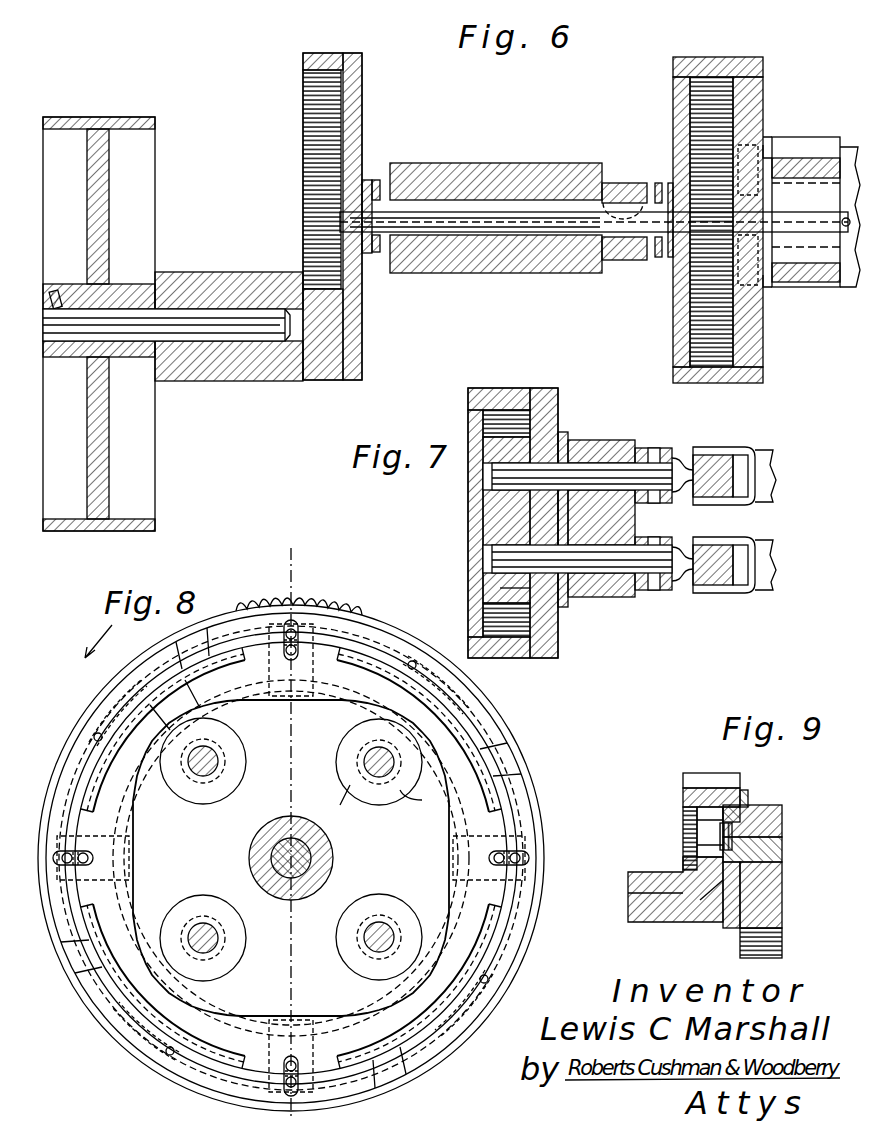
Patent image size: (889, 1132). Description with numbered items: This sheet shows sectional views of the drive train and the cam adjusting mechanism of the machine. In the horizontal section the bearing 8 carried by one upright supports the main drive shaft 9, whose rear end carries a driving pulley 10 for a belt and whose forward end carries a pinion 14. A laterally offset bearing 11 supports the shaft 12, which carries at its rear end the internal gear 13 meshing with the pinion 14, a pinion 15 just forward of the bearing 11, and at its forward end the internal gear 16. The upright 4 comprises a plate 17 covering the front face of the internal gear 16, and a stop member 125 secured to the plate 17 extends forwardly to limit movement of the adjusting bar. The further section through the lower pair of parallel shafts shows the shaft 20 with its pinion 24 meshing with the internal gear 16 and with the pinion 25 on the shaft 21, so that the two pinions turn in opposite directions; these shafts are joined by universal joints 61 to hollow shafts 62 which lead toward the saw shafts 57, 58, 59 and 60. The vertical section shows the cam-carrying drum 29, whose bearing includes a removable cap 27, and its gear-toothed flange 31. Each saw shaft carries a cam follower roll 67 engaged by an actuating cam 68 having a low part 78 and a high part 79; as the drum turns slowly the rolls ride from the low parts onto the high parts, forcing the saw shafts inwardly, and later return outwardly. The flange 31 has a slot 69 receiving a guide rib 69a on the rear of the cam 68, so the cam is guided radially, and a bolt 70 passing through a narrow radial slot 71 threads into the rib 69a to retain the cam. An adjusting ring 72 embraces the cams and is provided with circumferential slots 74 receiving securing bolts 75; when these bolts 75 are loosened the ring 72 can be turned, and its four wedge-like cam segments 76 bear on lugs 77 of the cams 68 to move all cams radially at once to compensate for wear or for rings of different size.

In FIG. 6, the upright 4 is at (822, 137).
In FIG. 6, the bearing 8 is at (218, 272).
In FIG. 6, the main drive shaft 9 is at (222, 333).
In FIG. 8, the main drive shaft 9 is at (312, 557).
In FIG. 6, the driving pulley 10 is at (150, 512).
In FIG. 6, the bearing 11 is at (430, 163).
In FIG. 6, the shaft 12 is at (475, 232).
In FIG. 6, the internal gear 13 is at (362, 114).
In FIG. 9, the internal gear 13 is at (750, 795).
In FIG. 6, the pinion 14 is at (325, 345).
In FIG. 6, the pinion 15 is at (640, 190).
In FIG. 6, the internal gear 16 is at (673, 68).
In FIG. 7, the internal gear 16 is at (498, 390).
In FIG. 6, the plate 17 is at (742, 57).
In FIG. 7, the plate 17 is at (548, 390).
In FIG. 6, the shaft 20 is at (800, 175).
In FIG. 7, the shaft 20 is at (592, 468).
In FIG. 6, the shaft 21 is at (796, 282).
In FIG. 7, the shaft 21 is at (615, 565).
In FIG. 7, the pinion 24 is at (497, 447).
In FIG. 7, the pinion 25 is at (500, 588).
In FIG. 9, the removable cap 27 is at (640, 874).
In FIG. 9, the cam-carrying drum 29 is at (634, 920).
In FIG. 8, the flange 31 is at (208, 620).
In FIG. 9, the flange 31 is at (690, 798).
In FIG. 8, the saw shaft 57 is at (372, 770).
In FIG. 8, the saw shaft 58 is at (208, 770).
In FIG. 8, the saw shaft 59 is at (212, 932).
In FIG. 8, the saw shaft 60 is at (372, 920).
In FIG. 7, the universal joint 61 is at (730, 447).
In FIG. 7, the hollow shaft 62 is at (776, 452).
In FIG. 8, the cam follower roll 67 is at (246, 780).
In FIG. 8, the actuating cam 68 is at (340, 690).
In FIG. 9, the actuating cam 68 is at (770, 905).
In FIG. 8, the slot 69 is at (330, 630).
In FIG. 9, the slot 69 is at (725, 805).
In FIG. 9, the guide rib 69a is at (723, 892).
In FIG. 9, the bolt 70 is at (690, 828).
In FIG. 9, the radial slot 71 is at (697, 855).
In FIG. 9, the adjusting ring 72 is at (765, 812).
In FIG. 8, the circumferential slot 74 is at (408, 640).
In FIG. 8, the securing bolt 75 is at (480, 690).
In FIG. 8, the cam segment 76 is at (362, 660).
In FIG. 9, the cam segment 76 is at (770, 850).
In FIG. 8, the lug 77 is at (255, 660).
In FIG. 8, the low part 78 is at (236, 720).
In FIG. 8, the high part 79 is at (140, 815).
In FIG. 6, the stop member 125 is at (835, 232).